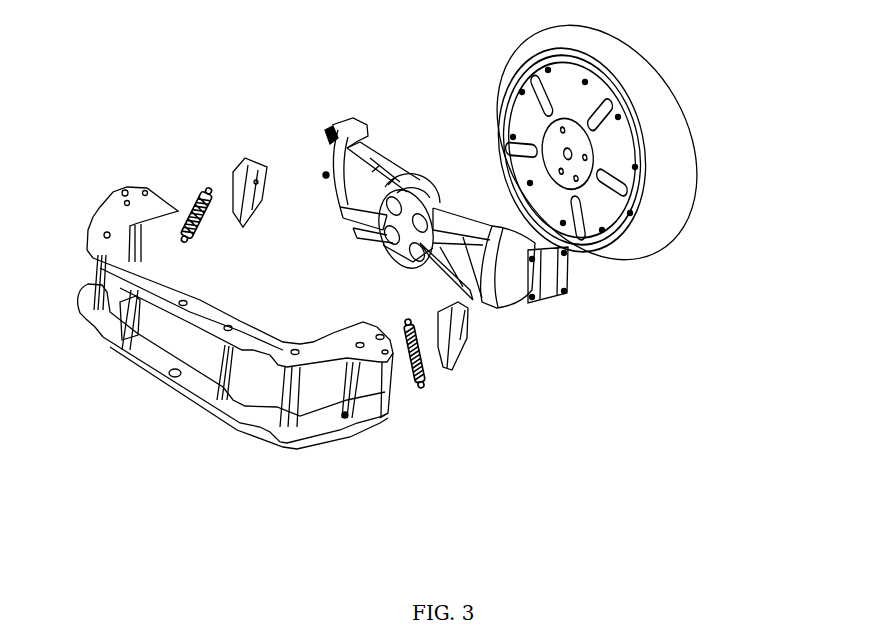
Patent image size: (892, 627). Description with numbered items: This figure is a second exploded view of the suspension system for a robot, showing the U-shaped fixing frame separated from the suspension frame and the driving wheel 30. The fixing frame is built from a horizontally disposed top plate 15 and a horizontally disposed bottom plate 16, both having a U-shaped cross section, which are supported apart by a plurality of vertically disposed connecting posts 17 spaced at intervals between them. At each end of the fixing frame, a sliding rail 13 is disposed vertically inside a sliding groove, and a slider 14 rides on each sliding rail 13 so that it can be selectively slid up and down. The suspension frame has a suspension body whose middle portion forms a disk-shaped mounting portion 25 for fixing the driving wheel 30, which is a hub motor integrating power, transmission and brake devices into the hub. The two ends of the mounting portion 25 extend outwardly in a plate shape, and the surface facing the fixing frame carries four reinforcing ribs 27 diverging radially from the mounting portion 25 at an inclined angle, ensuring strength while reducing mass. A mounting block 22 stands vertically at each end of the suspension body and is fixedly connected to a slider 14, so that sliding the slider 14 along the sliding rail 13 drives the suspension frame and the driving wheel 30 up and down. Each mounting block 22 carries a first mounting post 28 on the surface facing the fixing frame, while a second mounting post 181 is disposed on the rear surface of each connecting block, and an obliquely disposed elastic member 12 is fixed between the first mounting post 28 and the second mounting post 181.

The elastic member 12 is at (192, 197).
The sliding rail 13 is at (460, 370).
The slider 14 is at (243, 160).
The top plate 15 is at (183, 305).
The bottom plate 16 is at (232, 412).
The connecting post 17 is at (120, 347).
The second mounting post 181 is at (344, 414).
The mounting block 22 is at (567, 290).
The mounting portion 25 is at (425, 182).
The reinforcing rib 27 is at (381, 160).
The first mounting post 28 is at (528, 300).
The driving wheel 30 is at (673, 213).